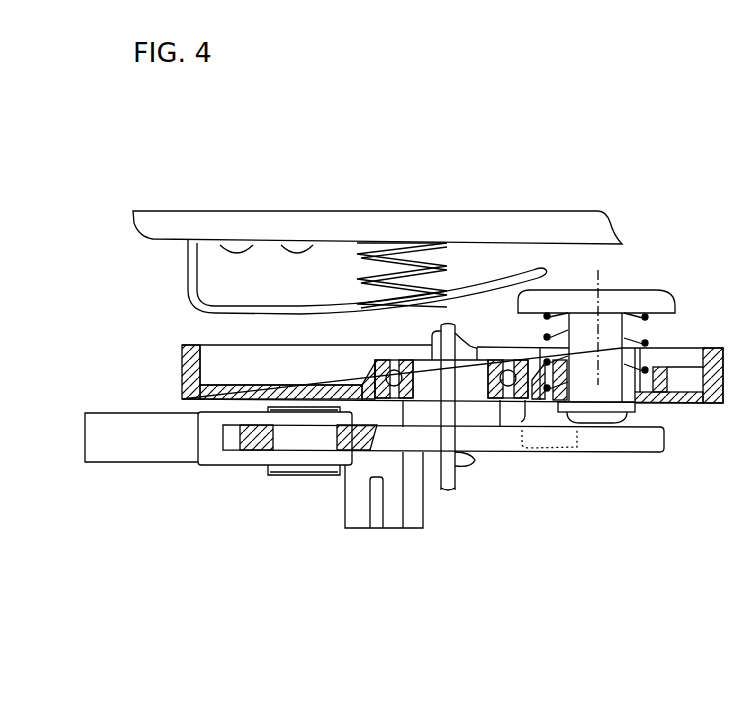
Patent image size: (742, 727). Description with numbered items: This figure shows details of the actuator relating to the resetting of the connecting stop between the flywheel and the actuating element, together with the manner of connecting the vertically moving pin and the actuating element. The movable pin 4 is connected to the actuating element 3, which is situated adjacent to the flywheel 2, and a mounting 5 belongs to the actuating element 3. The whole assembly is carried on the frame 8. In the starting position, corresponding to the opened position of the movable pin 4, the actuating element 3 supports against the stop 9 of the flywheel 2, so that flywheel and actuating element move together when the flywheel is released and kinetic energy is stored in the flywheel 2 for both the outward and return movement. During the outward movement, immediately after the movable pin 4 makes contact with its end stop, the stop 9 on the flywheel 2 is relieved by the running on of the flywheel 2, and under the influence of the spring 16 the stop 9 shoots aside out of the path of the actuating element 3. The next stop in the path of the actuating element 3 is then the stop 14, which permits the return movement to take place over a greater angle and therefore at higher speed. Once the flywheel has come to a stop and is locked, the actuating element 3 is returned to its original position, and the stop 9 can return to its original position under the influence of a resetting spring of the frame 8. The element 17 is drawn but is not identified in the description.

The flywheel 2 is at (683, 395).
The actuating element 3 is at (417, 438).
The movable pin 4 is at (150, 437).
The mounting 5 is at (350, 511).
The frame 8 is at (165, 223).
The stop 9 is at (594, 380).
The stop 14 is at (543, 422).
The spring 16 is at (637, 330).
The coil spring 17 is at (442, 285).